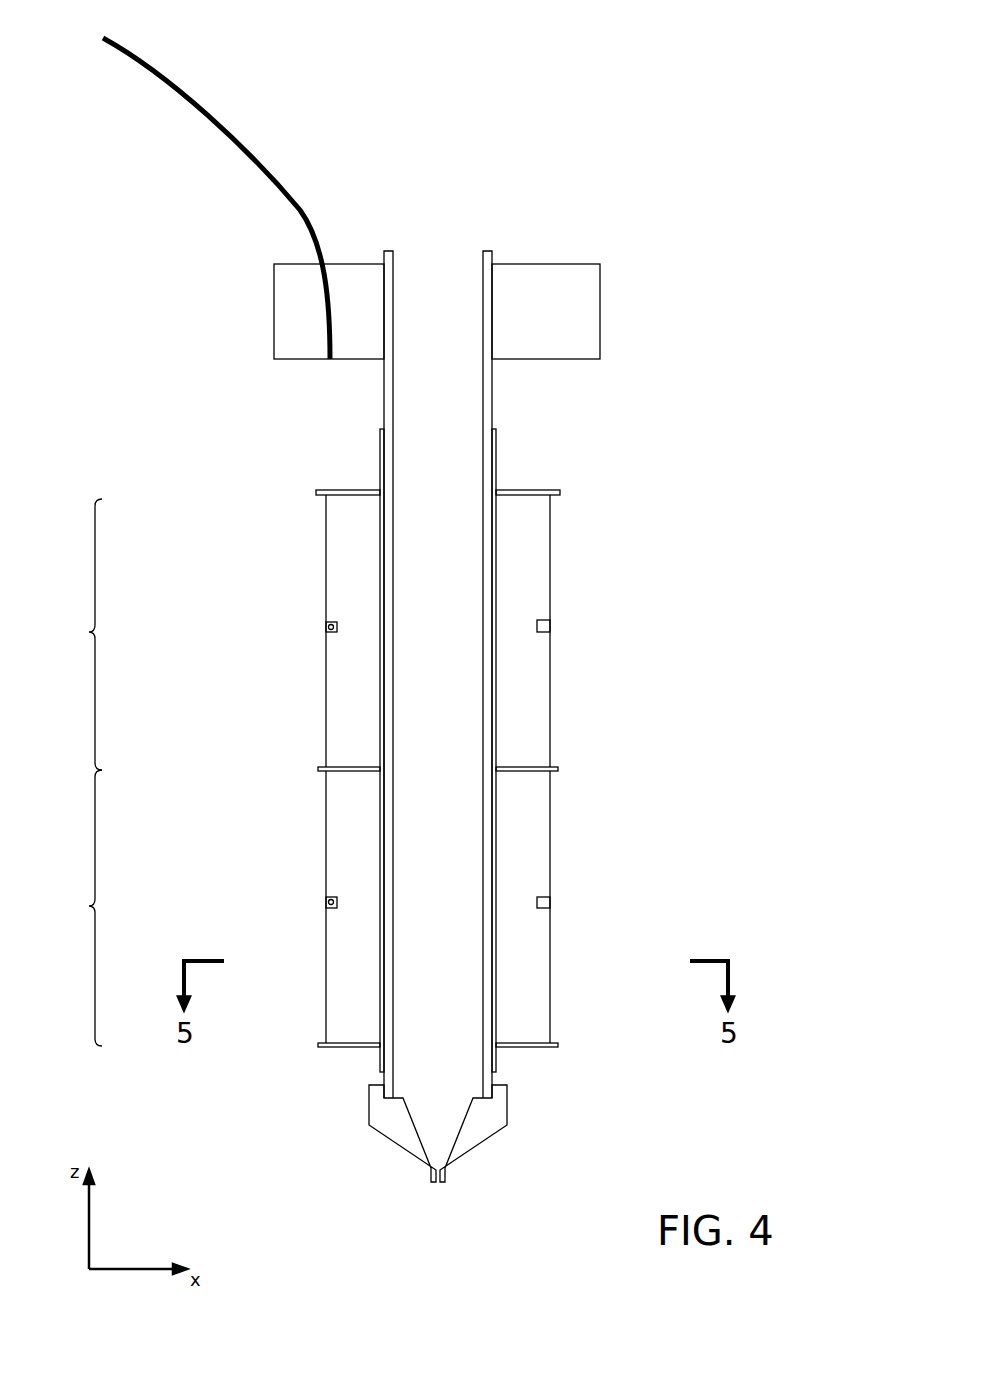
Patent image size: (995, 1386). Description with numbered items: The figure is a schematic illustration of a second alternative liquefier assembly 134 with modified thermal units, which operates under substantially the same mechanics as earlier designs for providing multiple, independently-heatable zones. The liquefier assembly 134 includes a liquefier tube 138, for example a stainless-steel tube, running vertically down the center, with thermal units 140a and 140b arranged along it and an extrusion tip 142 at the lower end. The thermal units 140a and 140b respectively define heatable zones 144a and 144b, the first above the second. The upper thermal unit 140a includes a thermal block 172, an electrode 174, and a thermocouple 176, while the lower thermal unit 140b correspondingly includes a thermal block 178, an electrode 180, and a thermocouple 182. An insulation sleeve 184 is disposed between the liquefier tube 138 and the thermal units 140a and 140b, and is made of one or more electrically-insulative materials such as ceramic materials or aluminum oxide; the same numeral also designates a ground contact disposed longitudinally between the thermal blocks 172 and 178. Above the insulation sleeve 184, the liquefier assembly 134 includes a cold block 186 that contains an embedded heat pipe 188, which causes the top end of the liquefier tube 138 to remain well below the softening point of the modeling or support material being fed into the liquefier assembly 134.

The liquefier assembly 134 is at (668, 80).
The heat pipe 188 is at (277, 182).
The cold block 186 is at (280, 293).
The liquefier tube 138 is at (386, 410).
The insulation sleeve 184 is at (380, 467).
The electrode 174 is at (317, 490).
The thermal block 172 is at (333, 536).
The thermocouple 176 is at (327, 627).
The thermal block 178 is at (335, 808).
The thermocouple 182 is at (327, 902).
The electrode 180 is at (322, 1043).
The extrusion tip 142 is at (476, 1145).
The heatable zone 144a is at (76, 634).
The heatable zone 144b is at (76, 908).
The thermal unit 140a is at (704, 657).
The thermal unit 140b is at (704, 782).